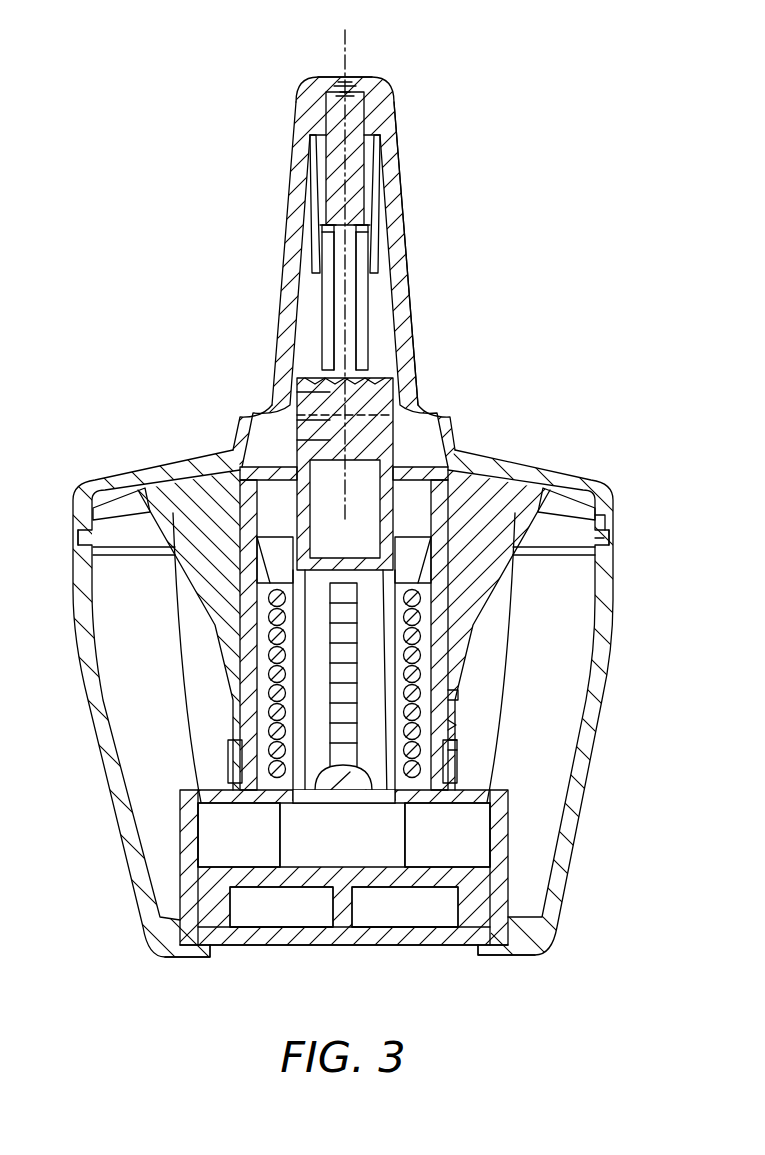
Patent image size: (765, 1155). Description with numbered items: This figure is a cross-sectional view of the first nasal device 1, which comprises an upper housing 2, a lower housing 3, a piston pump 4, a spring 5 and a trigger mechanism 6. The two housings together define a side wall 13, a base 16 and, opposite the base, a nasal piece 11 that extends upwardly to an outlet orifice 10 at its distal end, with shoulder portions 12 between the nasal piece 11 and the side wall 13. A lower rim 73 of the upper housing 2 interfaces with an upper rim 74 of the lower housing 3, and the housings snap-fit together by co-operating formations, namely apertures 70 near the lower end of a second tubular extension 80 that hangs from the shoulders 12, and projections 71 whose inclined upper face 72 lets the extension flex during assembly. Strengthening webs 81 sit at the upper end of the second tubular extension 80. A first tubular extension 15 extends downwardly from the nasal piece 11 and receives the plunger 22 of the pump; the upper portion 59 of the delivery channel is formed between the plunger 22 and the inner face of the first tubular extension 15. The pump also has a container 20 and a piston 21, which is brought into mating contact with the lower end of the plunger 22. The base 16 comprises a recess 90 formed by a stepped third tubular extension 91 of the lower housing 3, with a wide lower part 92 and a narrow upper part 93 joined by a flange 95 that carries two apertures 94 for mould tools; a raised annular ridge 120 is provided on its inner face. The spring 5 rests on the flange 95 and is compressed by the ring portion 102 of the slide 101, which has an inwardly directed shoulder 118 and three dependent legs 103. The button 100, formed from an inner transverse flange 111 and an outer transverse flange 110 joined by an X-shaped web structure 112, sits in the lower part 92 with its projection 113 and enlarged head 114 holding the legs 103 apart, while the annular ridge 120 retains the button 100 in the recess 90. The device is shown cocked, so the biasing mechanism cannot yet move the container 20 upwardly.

The first nasal device 1 is at (571, 226).
The upper housing 2 is at (441, 349).
The lower housing 3 is at (82, 782).
The piston pump 4 is at (382, 318).
The spring 5 is at (430, 700).
The trigger mechanism 6 is at (226, 988).
The outlet orifice 10 is at (371, 56).
The nasal piece 11 is at (283, 328).
The shoulder portions 12 is at (172, 463).
The side wall 13 is at (86, 647).
The first tubular extension 15 is at (382, 188).
The base 16 is at (503, 953).
The container 20 is at (297, 490).
The piston 21 is at (395, 389).
The plunger 22 is at (308, 202).
The upper portion of the delivery channel 59 is at (393, 152).
The apertures 70 is at (459, 716).
The projections 71 is at (446, 748).
The inclined upper face 72 is at (461, 727).
The lower rim 73 is at (611, 525).
The upper rim 74 is at (606, 537).
The second tubular extension 80 is at (228, 682).
The strengthening webs 81 is at (175, 513).
The recess 90 is at (481, 843).
The third tubular extension 91 is at (497, 820).
The lower part 92 is at (190, 835).
The upper part 93 is at (250, 628).
The apertures 94 is at (215, 795).
The flange 95 is at (449, 773).
The button 100 is at (432, 990).
The slide 101 is at (409, 517).
The ring portion 102 is at (482, 560).
The legs 103 is at (430, 660).
The outer transverse flange 110 is at (265, 950).
The inner transverse flange 111 is at (252, 870).
The X-shaped web structure 112 is at (320, 931).
The projection 113 is at (373, 845).
The enlarged head 114 is at (398, 822).
The inwardly directed shoulder 118 is at (440, 600).
The raised annular ridge 120 is at (233, 916).